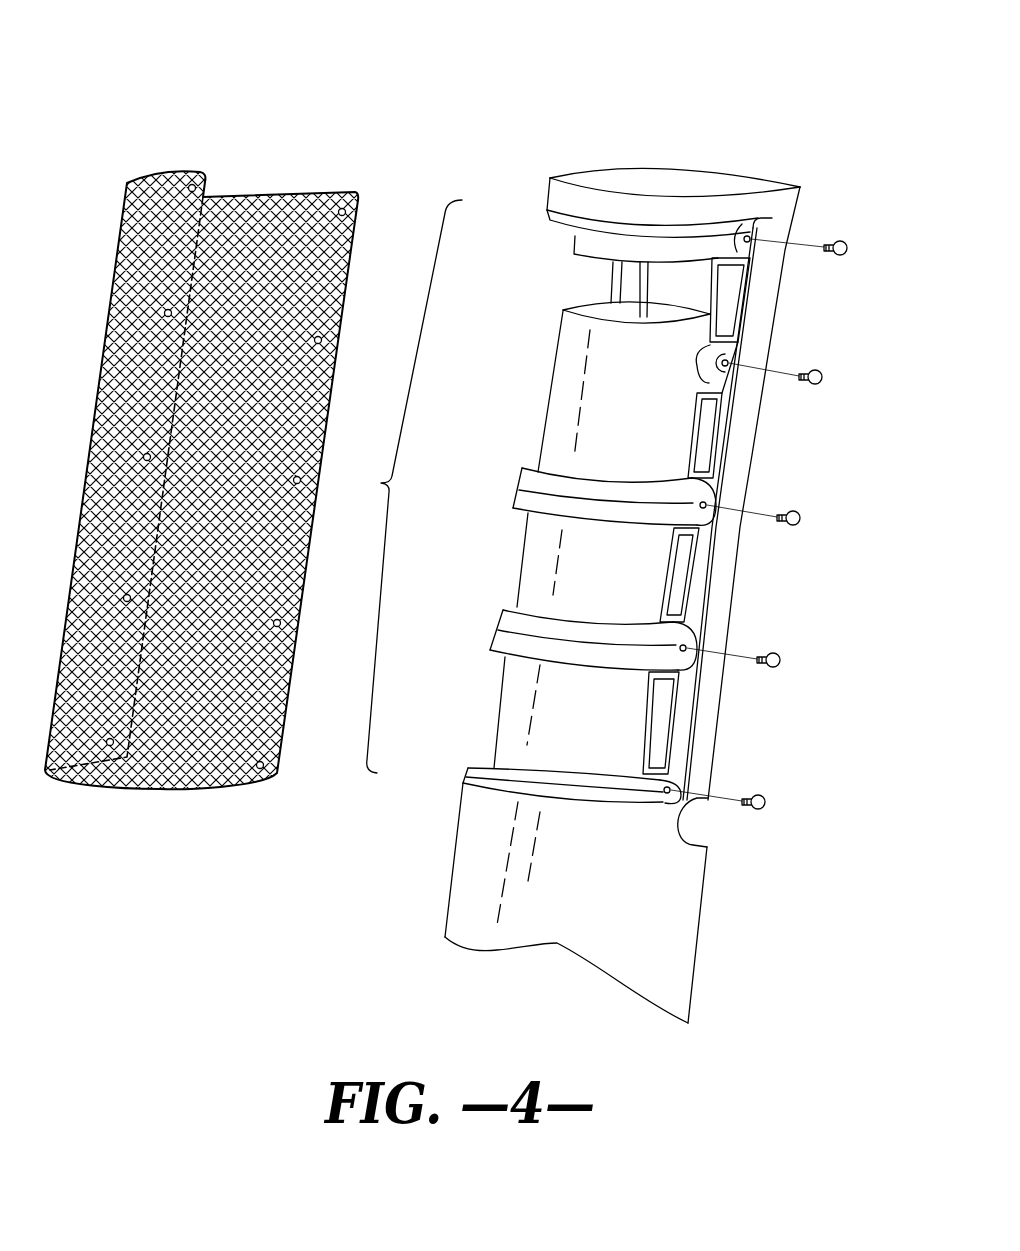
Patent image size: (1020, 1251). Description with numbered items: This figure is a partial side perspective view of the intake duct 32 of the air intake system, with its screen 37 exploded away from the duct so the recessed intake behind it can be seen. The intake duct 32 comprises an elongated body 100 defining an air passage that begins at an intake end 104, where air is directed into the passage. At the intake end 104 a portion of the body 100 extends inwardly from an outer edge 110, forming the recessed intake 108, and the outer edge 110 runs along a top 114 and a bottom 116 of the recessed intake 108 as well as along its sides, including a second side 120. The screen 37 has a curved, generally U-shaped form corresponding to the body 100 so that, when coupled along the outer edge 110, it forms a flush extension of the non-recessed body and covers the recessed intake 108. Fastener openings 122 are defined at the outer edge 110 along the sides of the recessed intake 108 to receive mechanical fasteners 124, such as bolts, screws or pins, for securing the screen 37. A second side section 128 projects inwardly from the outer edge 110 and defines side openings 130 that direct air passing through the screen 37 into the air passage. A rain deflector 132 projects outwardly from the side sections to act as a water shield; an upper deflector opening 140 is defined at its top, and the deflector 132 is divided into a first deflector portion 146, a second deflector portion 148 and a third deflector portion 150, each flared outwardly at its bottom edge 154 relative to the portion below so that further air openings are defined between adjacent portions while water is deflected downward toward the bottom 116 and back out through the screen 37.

The intake duct 32 is at (210, 90).
The screen 37 is at (240, 197).
The elongated body 100 is at (476, 876).
The intake end 104 is at (763, 276).
The recessed intake 108 is at (399, 486).
The outer edge 110 is at (588, 468).
The top 114 is at (612, 228).
The bottom 116 is at (472, 792).
The second side 120 is at (705, 597).
The fastener openings 122 is at (738, 240).
The mechanical fasteners 124 is at (847, 244).
The second side section 128 is at (738, 516).
The side openings 130 is at (724, 333).
The rain deflector 132 is at (565, 525).
The upper deflector opening 140 is at (587, 273).
The first deflector portion 146 is at (566, 393).
The second deflector portion 148 is at (538, 558).
The third deflector portion 150 is at (518, 698).
The bottom edge 154 is at (517, 511).